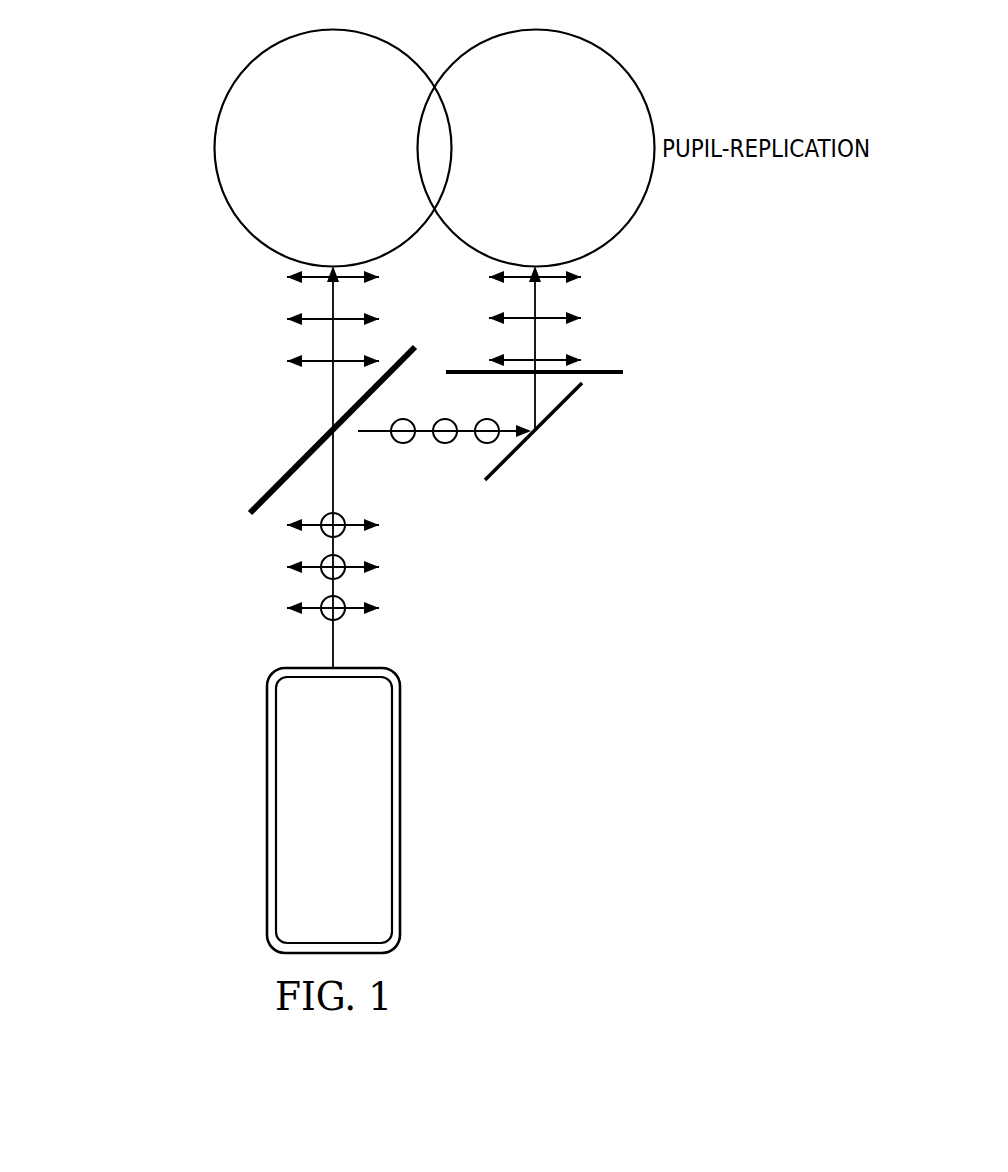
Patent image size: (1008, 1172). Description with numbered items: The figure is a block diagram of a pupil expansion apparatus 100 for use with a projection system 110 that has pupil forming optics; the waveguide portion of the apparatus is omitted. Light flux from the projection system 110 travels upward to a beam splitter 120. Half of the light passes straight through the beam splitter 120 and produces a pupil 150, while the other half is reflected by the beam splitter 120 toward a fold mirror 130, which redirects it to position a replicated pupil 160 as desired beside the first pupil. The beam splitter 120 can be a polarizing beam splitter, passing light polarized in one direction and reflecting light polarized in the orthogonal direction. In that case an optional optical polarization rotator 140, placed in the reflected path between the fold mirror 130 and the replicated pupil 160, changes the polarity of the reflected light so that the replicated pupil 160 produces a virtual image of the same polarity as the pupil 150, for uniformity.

The pupil expansion apparatus 100 is at (103, 201).
The projection system 110 is at (267, 809).
The beam splitter 120 is at (293, 467).
The fold mirror 130 is at (555, 415).
The optical polarization rotator 140 is at (605, 370).
The pupil 150 is at (355, 165).
The replicated pupil 160 is at (556, 165).